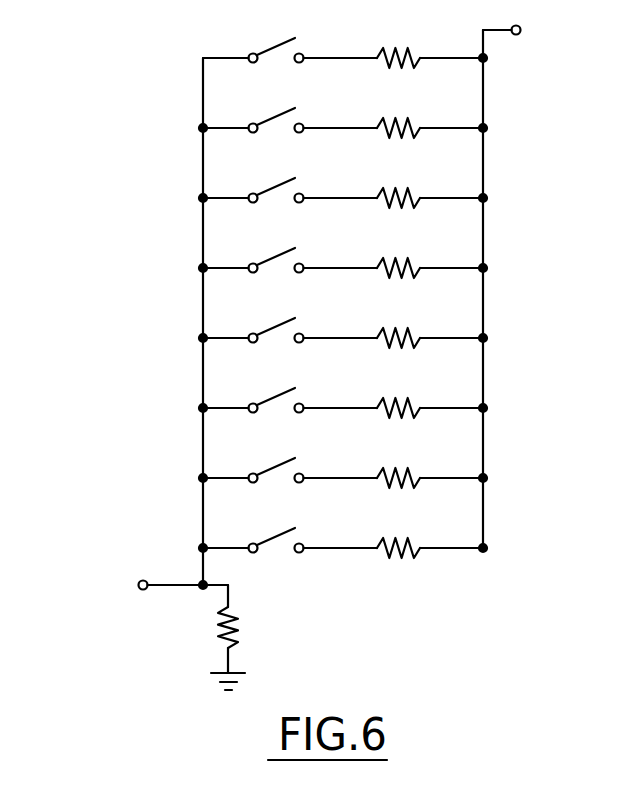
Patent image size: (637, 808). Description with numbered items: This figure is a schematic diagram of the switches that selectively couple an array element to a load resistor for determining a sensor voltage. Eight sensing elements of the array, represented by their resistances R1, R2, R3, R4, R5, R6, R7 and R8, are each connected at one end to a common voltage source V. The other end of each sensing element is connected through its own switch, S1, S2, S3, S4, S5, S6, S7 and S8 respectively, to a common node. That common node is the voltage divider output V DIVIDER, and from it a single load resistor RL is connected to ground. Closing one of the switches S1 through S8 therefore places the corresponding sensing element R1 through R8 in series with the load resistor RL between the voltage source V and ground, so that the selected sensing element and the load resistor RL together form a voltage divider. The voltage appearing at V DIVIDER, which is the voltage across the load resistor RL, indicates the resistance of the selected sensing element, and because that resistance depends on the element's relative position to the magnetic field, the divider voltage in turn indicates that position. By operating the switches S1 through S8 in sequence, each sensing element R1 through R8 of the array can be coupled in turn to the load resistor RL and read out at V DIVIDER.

The switch S1 is at (290, 48).
The switch S2 is at (290, 118).
The switch S3 is at (290, 188).
The switch S4 is at (290, 258).
The switch S5 is at (290, 328).
The switch S6 is at (290, 398).
The switch S7 is at (290, 468).
The switch S8 is at (290, 538).
The sensing element resistance R1 is at (432, 42).
The sensing element resistance R2 is at (432, 112).
The sensing element resistance R3 is at (432, 182).
The sensing element resistance R4 is at (432, 252).
The sensing element resistance R5 is at (432, 322).
The sensing element resistance R6 is at (432, 392).
The sensing element resistance R7 is at (432, 462).
The sensing element resistance R8 is at (432, 532).
The load resistor RL is at (241, 637).
The voltage source V is at (513, 32).
The voltage divider output V DIVIDER is at (130, 586).